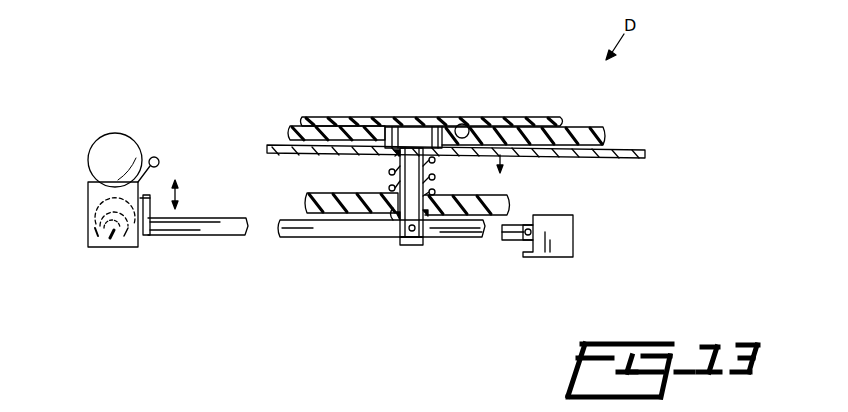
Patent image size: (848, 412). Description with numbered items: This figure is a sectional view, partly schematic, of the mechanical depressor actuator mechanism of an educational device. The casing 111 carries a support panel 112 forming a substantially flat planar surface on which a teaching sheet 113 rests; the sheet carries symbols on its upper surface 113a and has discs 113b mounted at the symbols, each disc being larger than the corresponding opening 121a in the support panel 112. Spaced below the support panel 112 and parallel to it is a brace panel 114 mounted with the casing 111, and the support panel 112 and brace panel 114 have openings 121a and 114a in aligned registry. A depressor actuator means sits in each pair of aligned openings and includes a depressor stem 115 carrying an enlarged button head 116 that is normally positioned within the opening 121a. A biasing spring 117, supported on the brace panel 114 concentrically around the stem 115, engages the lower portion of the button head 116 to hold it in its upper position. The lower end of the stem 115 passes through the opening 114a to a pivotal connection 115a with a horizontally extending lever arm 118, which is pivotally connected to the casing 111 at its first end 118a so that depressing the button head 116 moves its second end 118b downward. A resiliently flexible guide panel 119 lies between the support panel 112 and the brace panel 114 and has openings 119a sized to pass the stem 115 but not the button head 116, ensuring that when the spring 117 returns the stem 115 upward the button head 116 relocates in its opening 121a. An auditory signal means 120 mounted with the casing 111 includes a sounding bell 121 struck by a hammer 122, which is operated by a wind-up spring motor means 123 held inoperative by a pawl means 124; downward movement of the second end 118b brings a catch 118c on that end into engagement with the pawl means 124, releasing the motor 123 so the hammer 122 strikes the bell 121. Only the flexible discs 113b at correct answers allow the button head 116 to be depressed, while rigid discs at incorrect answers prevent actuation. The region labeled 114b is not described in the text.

The casing 111 is at (563, 248).
The support panel 112 is at (610, 137).
The teaching sheet 113 is at (552, 120).
The upper surface 113a is at (507, 122).
The disc 113b is at (382, 123).
The brace panel 114 is at (510, 207).
The opening 114a is at (400, 218).
The plate end 114b is at (475, 238).
The depressor stem 115 is at (432, 220).
The pivotal connection 115a is at (416, 246).
The button head 116 is at (413, 130).
The biasing spring 117 is at (389, 173).
The lever arm 118 is at (278, 223).
The first end 118a is at (518, 242).
The second end 118b is at (163, 238).
The catch 118c is at (150, 195).
The guide panel 119 is at (267, 146).
The opening 119a is at (442, 153).
The auditory signal means 120 is at (74, 118).
The sounding bell 121 is at (108, 140).
The opening 121a is at (459, 124).
The hammer 122 is at (152, 156).
The wind-up spring motor means 123 is at (107, 238).
The pawl means 124 is at (150, 216).